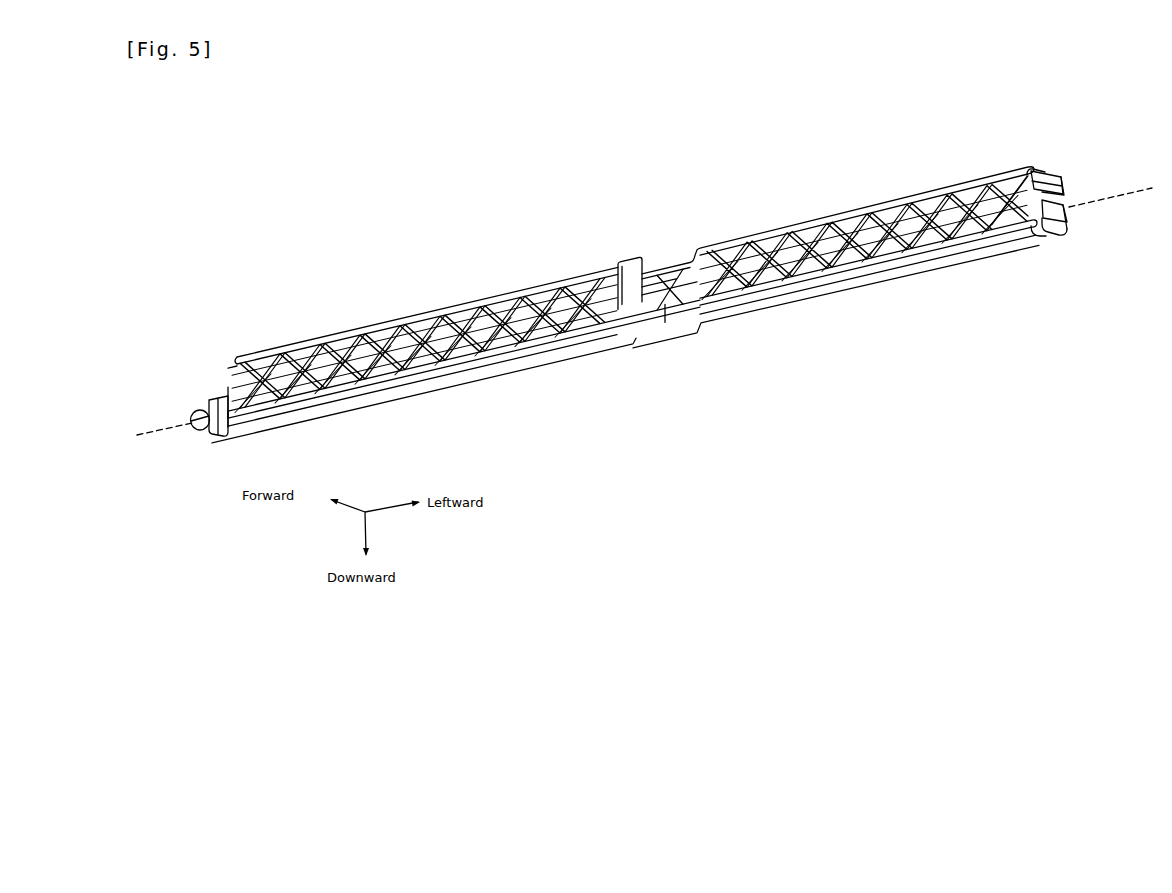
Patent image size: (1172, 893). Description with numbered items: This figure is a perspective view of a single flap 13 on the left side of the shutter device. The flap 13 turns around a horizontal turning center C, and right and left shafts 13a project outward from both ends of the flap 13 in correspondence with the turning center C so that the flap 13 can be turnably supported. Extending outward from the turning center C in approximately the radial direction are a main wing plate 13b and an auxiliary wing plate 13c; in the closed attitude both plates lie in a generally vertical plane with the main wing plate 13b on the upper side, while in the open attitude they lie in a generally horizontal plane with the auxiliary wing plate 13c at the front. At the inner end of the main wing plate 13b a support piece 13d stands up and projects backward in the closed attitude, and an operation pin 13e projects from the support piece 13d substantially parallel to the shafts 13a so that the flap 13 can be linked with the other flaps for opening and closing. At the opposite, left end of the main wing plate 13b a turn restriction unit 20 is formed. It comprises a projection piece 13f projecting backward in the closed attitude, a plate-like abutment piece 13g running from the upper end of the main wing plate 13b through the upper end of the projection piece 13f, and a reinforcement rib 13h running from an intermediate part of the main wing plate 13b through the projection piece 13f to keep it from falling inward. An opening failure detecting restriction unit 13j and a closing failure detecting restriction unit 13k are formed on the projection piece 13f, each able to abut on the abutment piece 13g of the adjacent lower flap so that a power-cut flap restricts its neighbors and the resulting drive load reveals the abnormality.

The flap 13 is at (871, 182).
The shaft 13a is at (207, 433).
The main wing plate 13b is at (400, 317).
The auxiliary wing plate 13c is at (498, 377).
The support piece 13d is at (255, 350).
The operation pin 13e is at (220, 398).
The projection piece 13f is at (1064, 187).
The abutment piece 13g is at (1041, 170).
The reinforcement rib 13h is at (1033, 236).
The opening failure detecting restriction unit 13j is at (1050, 235).
The closing failure detecting restriction unit 13k is at (1070, 214).
The turn restriction unit 20 is at (1034, 157).
The turning center C is at (148, 428).